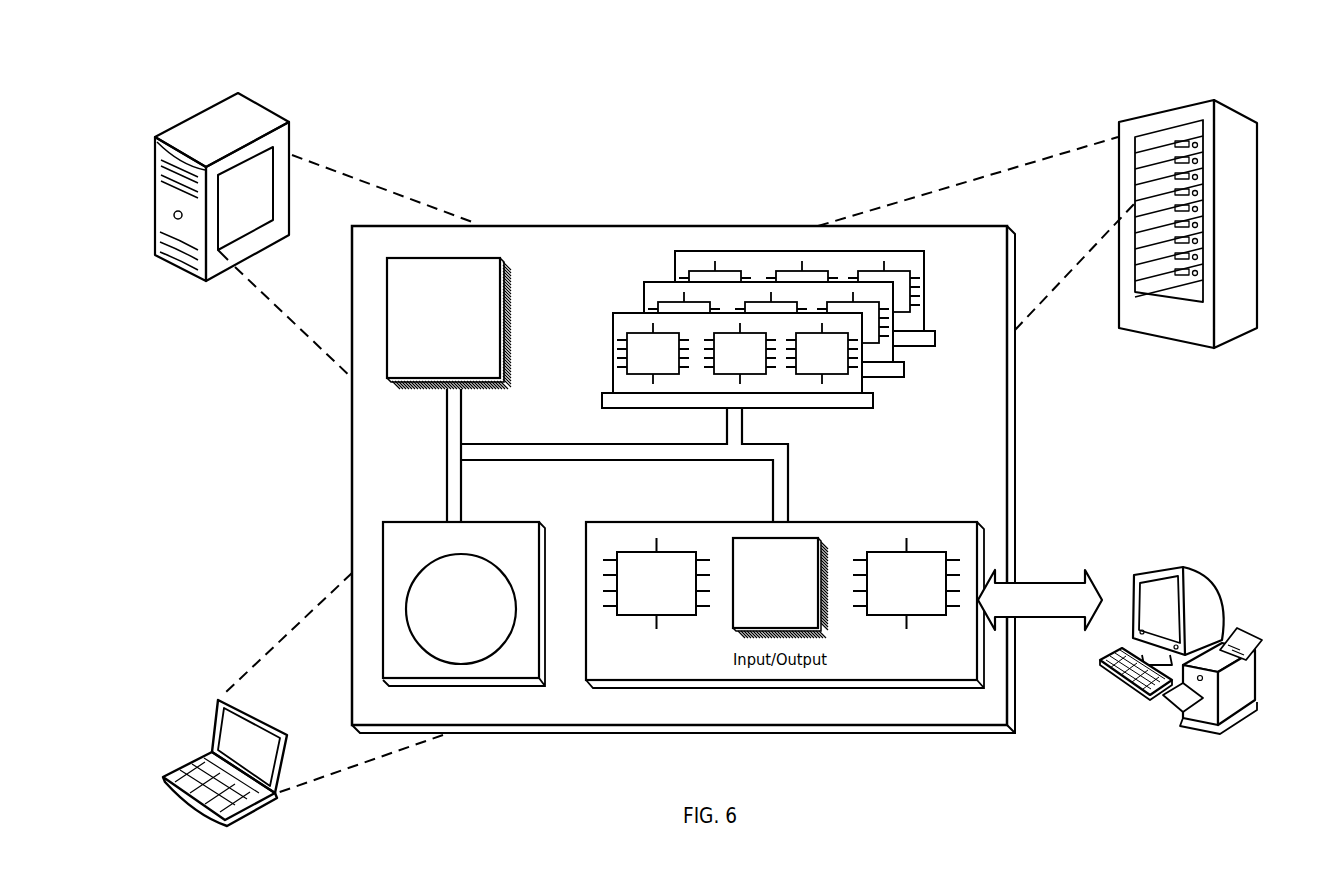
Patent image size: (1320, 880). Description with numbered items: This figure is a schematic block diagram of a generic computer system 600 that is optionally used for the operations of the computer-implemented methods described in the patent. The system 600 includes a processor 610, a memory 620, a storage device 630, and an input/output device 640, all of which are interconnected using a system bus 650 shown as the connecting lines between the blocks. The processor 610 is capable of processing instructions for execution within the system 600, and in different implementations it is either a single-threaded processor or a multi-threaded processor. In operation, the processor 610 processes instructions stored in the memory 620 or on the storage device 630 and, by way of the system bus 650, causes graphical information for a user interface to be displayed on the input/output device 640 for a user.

The computer system 600 is at (154, 66).
The processor 610 is at (449, 323).
The memory 620 is at (932, 377).
The storage device 630 is at (464, 604).
The input/output device 640 is at (1132, 572).
The system bus 650 is at (612, 460).